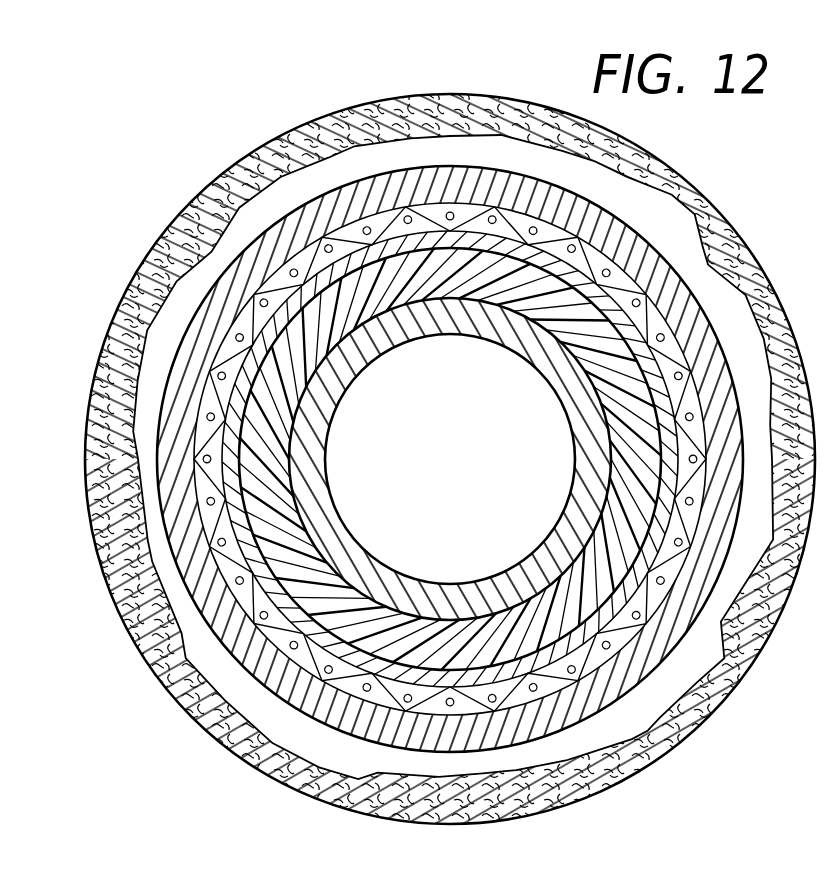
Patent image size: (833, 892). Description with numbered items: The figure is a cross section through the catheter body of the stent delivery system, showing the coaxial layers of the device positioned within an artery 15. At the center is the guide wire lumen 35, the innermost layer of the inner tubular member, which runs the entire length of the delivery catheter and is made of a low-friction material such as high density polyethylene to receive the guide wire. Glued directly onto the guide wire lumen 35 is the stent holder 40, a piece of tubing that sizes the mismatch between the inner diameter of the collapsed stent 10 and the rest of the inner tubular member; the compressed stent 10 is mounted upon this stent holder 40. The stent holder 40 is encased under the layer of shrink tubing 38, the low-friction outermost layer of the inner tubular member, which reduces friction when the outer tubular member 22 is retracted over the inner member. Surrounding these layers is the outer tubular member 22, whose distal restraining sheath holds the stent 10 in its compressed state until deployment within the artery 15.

The self-expanding stent 10 is at (437, 459).
The artery 15 is at (173, 252).
The outer tubular member 22 is at (308, 215).
The guide wire lumen 35 is at (568, 395).
The shrink tubing 38 is at (607, 303).
The stent holder 40 is at (388, 283).